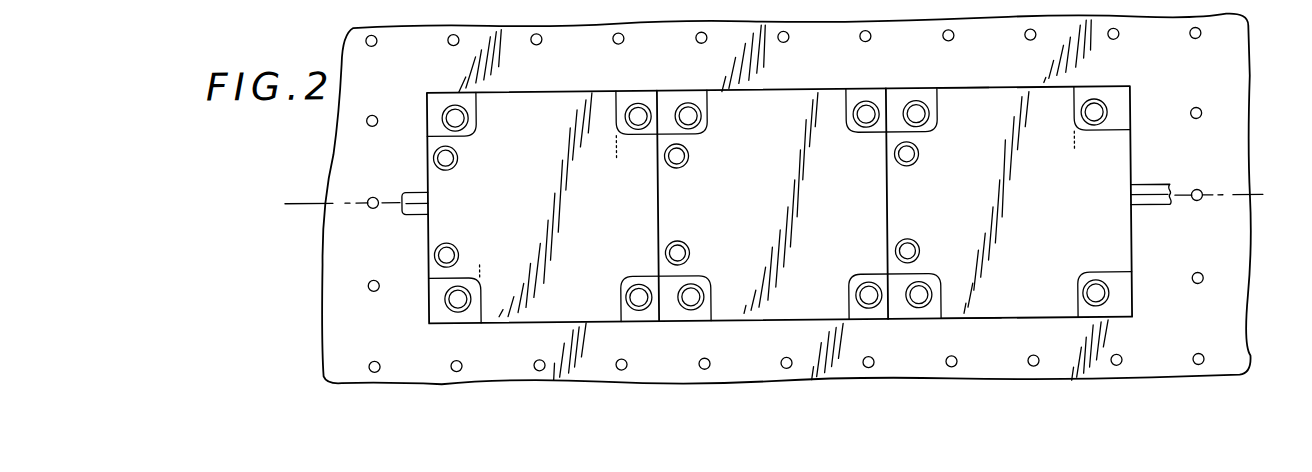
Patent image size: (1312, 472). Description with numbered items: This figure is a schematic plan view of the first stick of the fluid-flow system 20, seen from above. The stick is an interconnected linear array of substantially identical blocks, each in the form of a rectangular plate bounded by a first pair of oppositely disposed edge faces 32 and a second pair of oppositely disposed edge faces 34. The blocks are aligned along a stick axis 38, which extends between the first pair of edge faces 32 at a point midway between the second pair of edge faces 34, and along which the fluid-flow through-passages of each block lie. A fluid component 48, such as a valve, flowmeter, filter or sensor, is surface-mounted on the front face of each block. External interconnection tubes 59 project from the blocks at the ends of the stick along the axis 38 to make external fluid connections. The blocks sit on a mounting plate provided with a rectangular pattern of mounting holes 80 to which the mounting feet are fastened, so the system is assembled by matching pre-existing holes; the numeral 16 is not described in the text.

The fluid-flow system 20 is at (340, 28).
The base plate 16 is at (786, 193).
The mounting holes 80 is at (452, 34).
The fluid component 48 is at (555, 92).
The first pair of oppositely disposed edge faces 32 is at (658, 191).
The second pair of oppositely disposed edge faces 34 is at (962, 89).
The external interconnection tube 59 is at (416, 190).
The stick axis 38 is at (1268, 199).